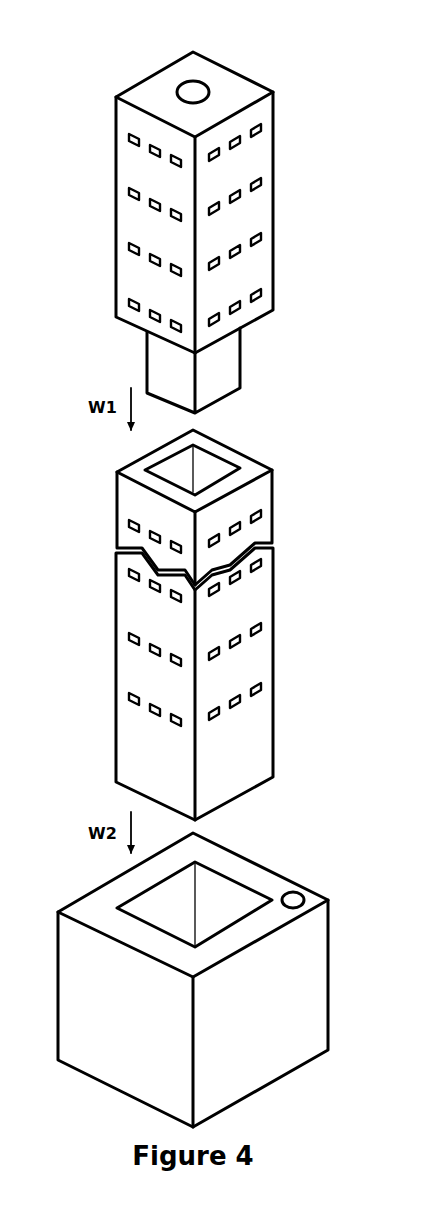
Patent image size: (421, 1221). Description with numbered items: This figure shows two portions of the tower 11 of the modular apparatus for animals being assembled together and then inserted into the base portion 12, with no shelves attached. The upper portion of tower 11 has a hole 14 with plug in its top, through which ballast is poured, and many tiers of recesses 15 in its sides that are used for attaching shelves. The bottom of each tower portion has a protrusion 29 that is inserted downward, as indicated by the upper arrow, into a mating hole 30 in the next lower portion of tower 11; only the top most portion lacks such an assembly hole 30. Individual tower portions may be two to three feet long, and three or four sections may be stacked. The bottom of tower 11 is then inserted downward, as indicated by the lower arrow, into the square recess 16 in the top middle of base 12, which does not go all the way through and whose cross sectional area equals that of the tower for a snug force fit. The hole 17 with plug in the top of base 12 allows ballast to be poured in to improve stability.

The tower portion 11 is at (277, 270).
The base portion 12 is at (97, 912).
The hole with plug 14 is at (210, 82).
The recesses 15 is at (262, 223).
The square recess 16 is at (213, 895).
The hole with plug 17 is at (305, 890).
The protrusion 29 is at (217, 372).
The mating hole 30 is at (205, 470).